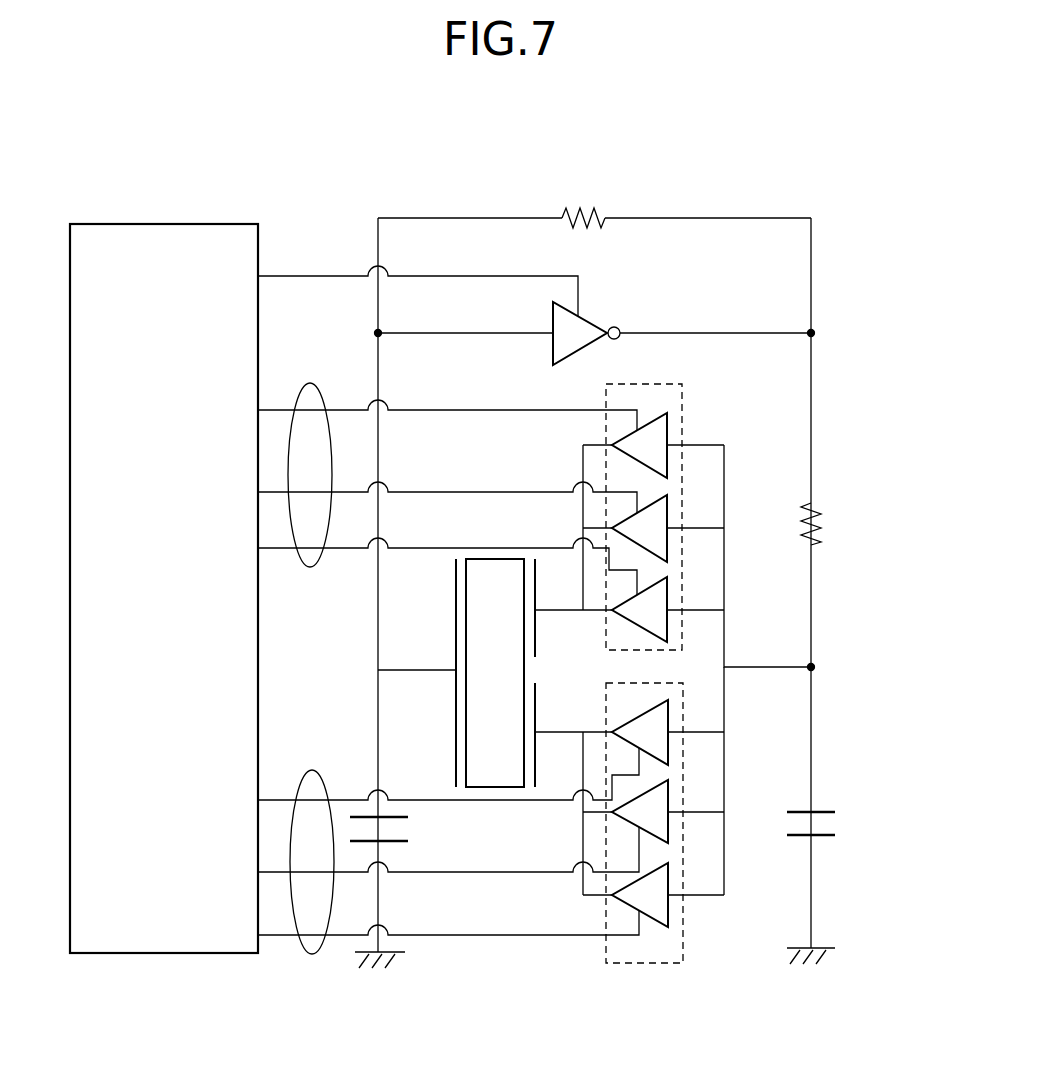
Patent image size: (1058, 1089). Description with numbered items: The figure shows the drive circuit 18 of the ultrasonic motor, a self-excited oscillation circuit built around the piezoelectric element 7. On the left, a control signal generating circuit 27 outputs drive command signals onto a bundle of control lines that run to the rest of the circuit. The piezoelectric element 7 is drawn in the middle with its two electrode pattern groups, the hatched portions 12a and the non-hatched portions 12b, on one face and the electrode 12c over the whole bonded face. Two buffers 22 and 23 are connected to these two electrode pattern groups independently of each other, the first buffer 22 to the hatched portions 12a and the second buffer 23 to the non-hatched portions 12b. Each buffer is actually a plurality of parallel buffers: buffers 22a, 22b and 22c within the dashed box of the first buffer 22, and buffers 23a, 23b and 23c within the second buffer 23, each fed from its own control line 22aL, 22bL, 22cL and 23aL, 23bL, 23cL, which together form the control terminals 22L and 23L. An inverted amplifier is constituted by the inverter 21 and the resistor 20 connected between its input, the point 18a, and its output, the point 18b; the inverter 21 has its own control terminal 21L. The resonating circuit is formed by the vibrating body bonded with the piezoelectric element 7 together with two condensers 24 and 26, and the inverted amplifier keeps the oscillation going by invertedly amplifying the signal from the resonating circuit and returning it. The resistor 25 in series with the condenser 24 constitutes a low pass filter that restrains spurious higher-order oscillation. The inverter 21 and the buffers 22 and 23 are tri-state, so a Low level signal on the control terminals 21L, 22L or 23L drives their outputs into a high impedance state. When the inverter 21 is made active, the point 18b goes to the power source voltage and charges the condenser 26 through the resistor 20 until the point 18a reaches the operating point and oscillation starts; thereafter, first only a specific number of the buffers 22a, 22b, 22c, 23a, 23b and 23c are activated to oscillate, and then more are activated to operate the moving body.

The piezoelectric element 7 is at (475, 730).
The hatched portions 12a is at (535, 632).
The non-hatched portions 12b is at (551, 699).
The electrode 12c is at (456, 618).
The drive circuit 18 is at (850, 263).
The point 18a is at (378, 333).
The point 18b is at (815, 333).
The resistor 20 is at (578, 210).
The inverter 21 is at (583, 318).
The control terminal 21L is at (432, 276).
The buffer 22 is at (660, 385).
The buffer 22a is at (670, 430).
The buffer 22b is at (670, 510).
The buffer 22c is at (670, 592).
The control terminal 22L is at (310, 567).
The control line 22aL is at (470, 388).
The control line 22bL is at (470, 470).
The control line 22cL is at (470, 527).
The buffer 23 is at (663, 683).
The buffer 23a is at (670, 712).
The buffer 23b is at (670, 794).
The buffer 23c is at (670, 880).
The control terminal 23L is at (312, 955).
The control line 23aL is at (482, 800).
The control line 23bL is at (480, 872).
The control line 23cL is at (482, 936).
The condenser 24 is at (838, 818).
The resistor 25 is at (822, 525).
The condenser 26 is at (412, 826).
The control signal generating circuit 27 is at (213, 957).